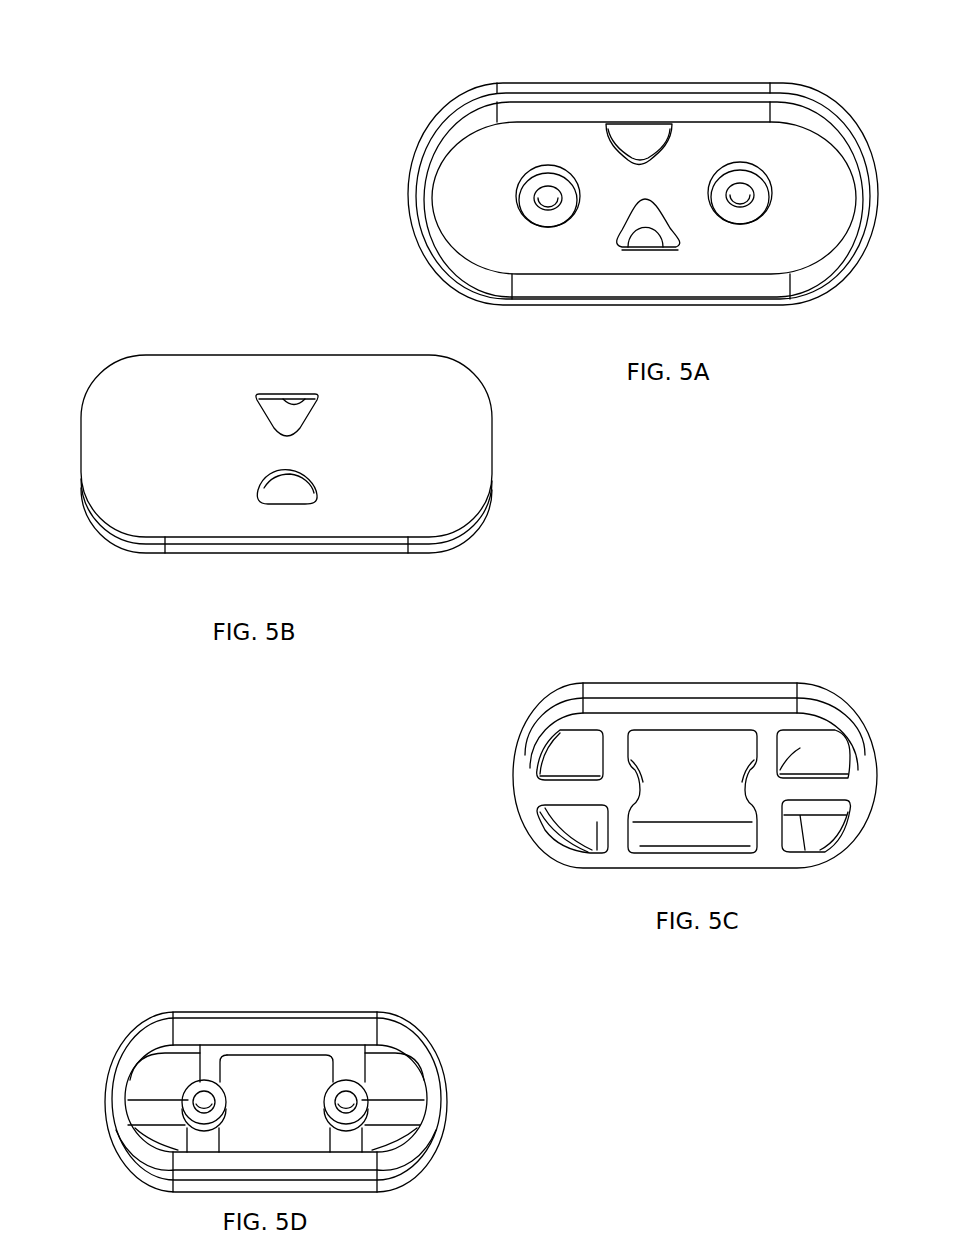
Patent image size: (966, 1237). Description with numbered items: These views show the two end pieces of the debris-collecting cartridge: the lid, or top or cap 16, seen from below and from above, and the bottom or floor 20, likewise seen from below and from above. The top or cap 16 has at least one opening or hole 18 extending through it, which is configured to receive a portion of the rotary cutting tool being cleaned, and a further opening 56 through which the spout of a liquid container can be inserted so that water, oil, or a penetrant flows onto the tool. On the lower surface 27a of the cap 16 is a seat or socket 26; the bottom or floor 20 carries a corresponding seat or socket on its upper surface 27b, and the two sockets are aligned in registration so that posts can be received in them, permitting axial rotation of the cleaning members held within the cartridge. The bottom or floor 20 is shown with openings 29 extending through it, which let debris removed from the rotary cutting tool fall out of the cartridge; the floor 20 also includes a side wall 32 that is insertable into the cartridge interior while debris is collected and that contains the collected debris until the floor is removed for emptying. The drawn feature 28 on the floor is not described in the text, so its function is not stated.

In FIG. 5A, the top or cap 16 is at (465, 94).
In FIG. 5B, the top or cap 16 is at (142, 366).
In FIG. 5A, the opening or hole 18 is at (672, 157).
In FIG. 5B, the opening or hole 18 is at (268, 493).
In FIG. 5A, the seat or socket 26 is at (517, 203).
In FIG. 5A, the lower surface 27a is at (810, 246).
In FIG. 5A, the opening 56 is at (630, 248).
In FIG. 5B, the opening 56 is at (314, 395).
In FIG. 5C, the bottom or floor 20 is at (513, 760).
In FIG. 5D, the bottom or floor 20 is at (440, 1110).
In FIG. 5C, the latch 28 is at (648, 778).
In FIG. 5D, the latch 28 is at (198, 1082).
In FIG. 5C, the openings 29 is at (828, 744).
In FIG. 5D, the openings 29 is at (268, 1072).
In FIG. 5D, the upper surface 27b is at (350, 1063).
In FIG. 5D, the side wall 32 is at (130, 1050).